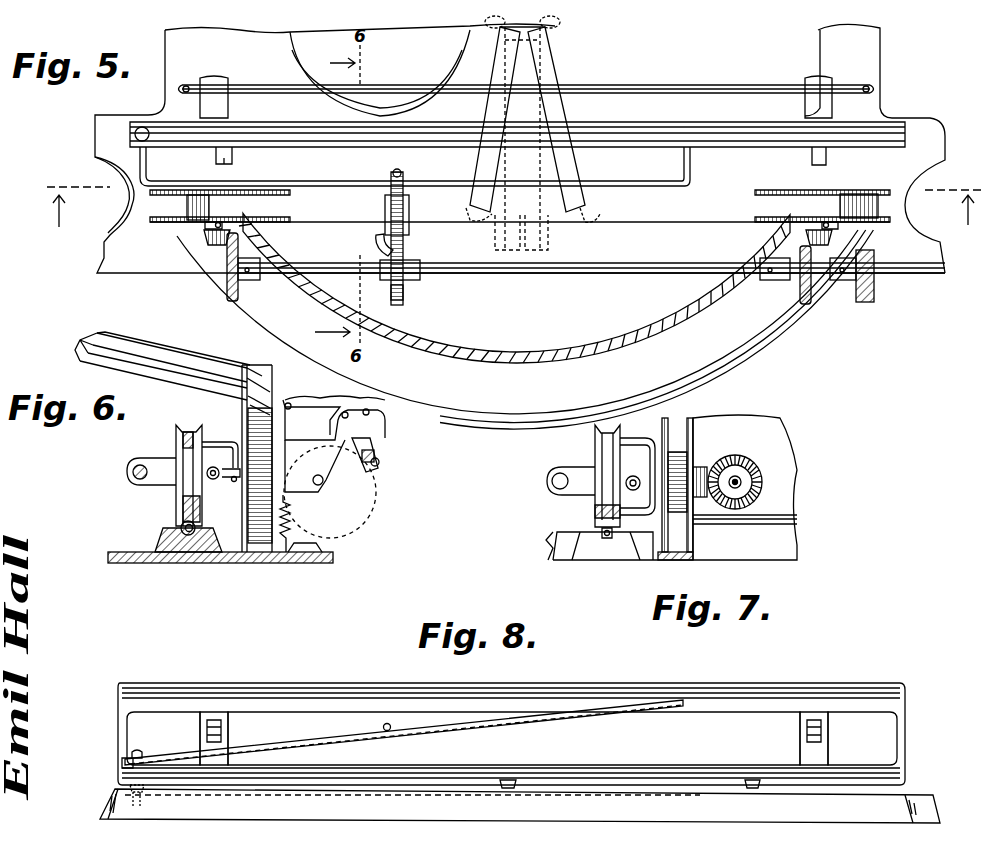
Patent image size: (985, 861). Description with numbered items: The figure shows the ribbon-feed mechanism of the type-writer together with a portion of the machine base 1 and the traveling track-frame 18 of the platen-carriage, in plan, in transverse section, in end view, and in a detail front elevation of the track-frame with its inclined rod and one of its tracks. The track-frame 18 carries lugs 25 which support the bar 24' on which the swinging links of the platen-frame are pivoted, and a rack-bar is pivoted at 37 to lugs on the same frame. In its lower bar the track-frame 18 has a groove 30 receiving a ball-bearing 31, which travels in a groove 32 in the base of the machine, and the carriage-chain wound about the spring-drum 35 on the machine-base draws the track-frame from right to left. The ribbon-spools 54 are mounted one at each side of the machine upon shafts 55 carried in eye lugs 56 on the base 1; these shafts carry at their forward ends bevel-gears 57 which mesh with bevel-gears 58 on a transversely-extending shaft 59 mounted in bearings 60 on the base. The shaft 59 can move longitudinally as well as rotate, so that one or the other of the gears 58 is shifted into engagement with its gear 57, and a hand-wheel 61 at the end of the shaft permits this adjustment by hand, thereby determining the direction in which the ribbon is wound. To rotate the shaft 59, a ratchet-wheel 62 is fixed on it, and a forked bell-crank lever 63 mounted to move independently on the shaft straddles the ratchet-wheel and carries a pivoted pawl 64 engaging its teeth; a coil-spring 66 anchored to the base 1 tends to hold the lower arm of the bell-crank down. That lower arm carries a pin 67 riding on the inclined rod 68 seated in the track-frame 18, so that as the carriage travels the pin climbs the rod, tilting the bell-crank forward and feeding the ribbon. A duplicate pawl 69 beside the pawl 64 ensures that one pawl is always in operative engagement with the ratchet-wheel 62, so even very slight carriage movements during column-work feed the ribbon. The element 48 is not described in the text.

In FIG. 5, the base 1 is at (732, 333).
In FIG. 6, the base 1 is at (325, 552).
In FIG. 7, the base 1 is at (557, 545).
In FIG. 8, the base 1 is at (910, 802).
In FIG. 5, the track-frame 18 is at (848, 136).
In FIG. 6, the track-frame 18 is at (182, 430).
In FIG. 7, the track-frame 18 is at (600, 460).
In FIG. 8, the track-frame 18 is at (752, 694).
In FIG. 5, the bar 24' is at (526, 78).
In FIG. 6, the bar 24' is at (114, 459).
In FIG. 5, the lugs 25 is at (210, 86).
In FIG. 6, the lugs 25 is at (150, 458).
In FIG. 7, the lugs 25 is at (547, 481).
In FIG. 6, the groove 30 is at (183, 508).
In FIG. 7, the groove 30 is at (597, 512).
In FIG. 6, the ball-bearing 31 is at (181, 526).
In FIG. 8, the ball-bearing 31 is at (290, 790).
In FIG. 6, the groove 32 is at (189, 533).
In FIG. 7, the groove 32 is at (606, 540).
In FIG. 5, the spring-drum 35 is at (380, 73).
In FIG. 5, the pivot 37 is at (230, 158).
In FIG. 6, the pivot 37 is at (217, 463).
In FIG. 7, the pivot 37 is at (635, 473).
In FIG. 8, the pivot 37 is at (207, 729).
In FIG. 8, the diagonal bar 48 is at (287, 745).
In FIG. 5, the ribbon-spools 54 is at (190, 222).
In FIG. 7, the ribbon-spools 54 is at (673, 453).
In FIG. 5, the shafts 55 is at (205, 225).
In FIG. 5, the eye lugs 56 is at (258, 244).
In FIG. 5, the bevel-gears 57 is at (210, 240).
In FIG. 7, the bevel-gears 57 is at (712, 500).
In FIG. 5, the bevel-gears 58 is at (238, 285).
In FIG. 7, the bevel-gears 58 is at (732, 456).
In FIG. 5, the shaft 59 is at (594, 265).
In FIG. 6, the shaft 59 is at (328, 482).
In FIG. 7, the shaft 59 is at (736, 490).
In FIG. 5, the bearings 60 is at (765, 272).
In FIG. 5, the hand-wheel 61 is at (866, 300).
In FIG. 5, the ratchet-wheel 62 is at (404, 300).
In FIG. 6, the ratchet-wheel 62 is at (325, 490).
In FIG. 5, the forked bell-crank lever 63 is at (405, 240).
In FIG. 6, the forked bell-crank lever 63 is at (376, 452).
In FIG. 5, the pawl 64 is at (382, 258).
In FIG. 6, the pawl 64 is at (380, 468).
In FIG. 5, the coil-spring 66 is at (378, 244).
In FIG. 6, the coil-spring 66 is at (290, 517).
In FIG. 5, the pin 67 is at (400, 172).
In FIG. 6, the pin 67 is at (230, 480).
In FIG. 8, the pin 67 is at (391, 726).
In FIG. 5, the inclined rod 68 is at (290, 182).
In FIG. 6, the inclined rod 68 is at (214, 440).
In FIG. 7, the inclined rod 68 is at (634, 438).
In FIG. 6, the duplicate pawl 69 is at (362, 418).